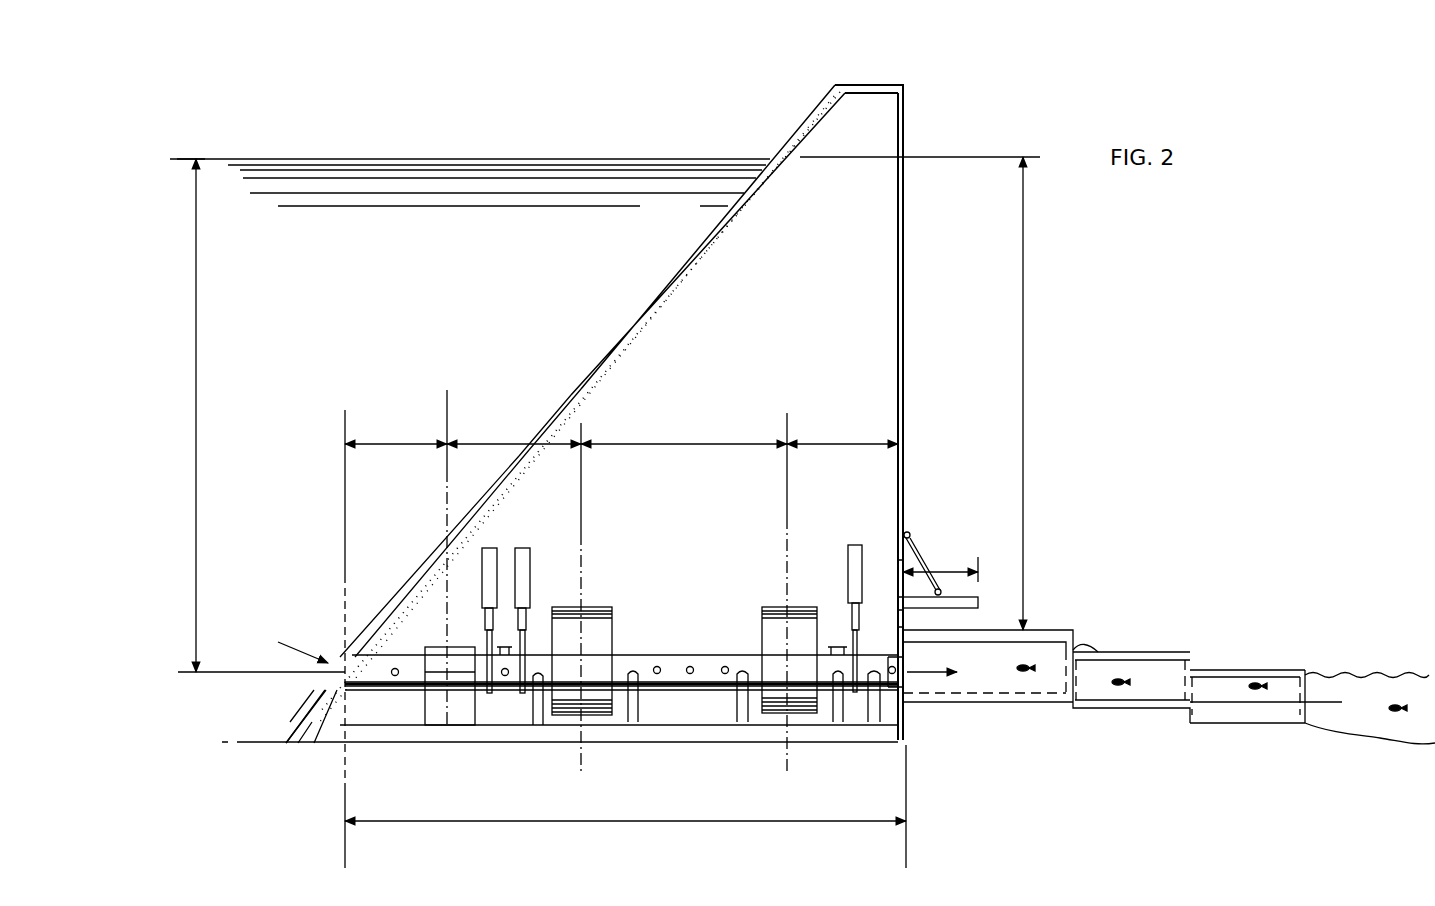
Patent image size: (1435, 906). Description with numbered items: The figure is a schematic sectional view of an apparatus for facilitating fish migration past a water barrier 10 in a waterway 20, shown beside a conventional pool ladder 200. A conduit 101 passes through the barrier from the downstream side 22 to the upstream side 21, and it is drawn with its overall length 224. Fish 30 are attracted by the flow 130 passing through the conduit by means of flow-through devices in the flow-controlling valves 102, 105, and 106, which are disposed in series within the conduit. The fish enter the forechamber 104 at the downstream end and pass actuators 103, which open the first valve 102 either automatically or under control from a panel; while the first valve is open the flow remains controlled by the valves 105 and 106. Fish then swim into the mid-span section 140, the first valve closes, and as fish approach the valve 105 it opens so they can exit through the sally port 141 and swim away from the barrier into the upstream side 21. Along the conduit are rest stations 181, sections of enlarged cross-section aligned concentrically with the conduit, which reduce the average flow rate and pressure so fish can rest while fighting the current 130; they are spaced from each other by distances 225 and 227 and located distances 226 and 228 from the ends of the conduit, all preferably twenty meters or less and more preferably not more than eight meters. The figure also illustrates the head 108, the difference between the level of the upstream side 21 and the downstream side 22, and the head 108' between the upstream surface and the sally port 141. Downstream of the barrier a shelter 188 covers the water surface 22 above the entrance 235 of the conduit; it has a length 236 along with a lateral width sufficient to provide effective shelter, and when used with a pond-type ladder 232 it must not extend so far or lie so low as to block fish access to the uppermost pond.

The water barrier 10 is at (903, 120).
The waterway 20 is at (455, 152).
The upstream side 21 is at (640, 192).
The downstream side 22 is at (1388, 675).
The fish 30 is at (1030, 662).
The conduit 101 is at (676, 653).
The first valve 102 is at (848, 562).
The actuators 103 is at (397, 677).
The forechamber 104 is at (890, 688).
The valve 105 is at (530, 557).
The valve 106 is at (482, 570).
The head 108 is at (1069, 393).
The head 108' is at (257, 415).
The flow 130 is at (297, 642).
The mid-span section 140 is at (702, 688).
The sally port 141 is at (380, 690).
The rest stations 181 is at (603, 607).
The shelter 188 is at (978, 600).
The pool ladder 200 is at (1220, 608).
The length 224 is at (622, 822).
The distance 225 is at (690, 442).
The distance 226 is at (392, 442).
The distance 227 is at (503, 442).
The distance 228 is at (845, 442).
The ladder 232 is at (1010, 628).
The entrance 235 is at (905, 660).
The length 236 is at (938, 590).